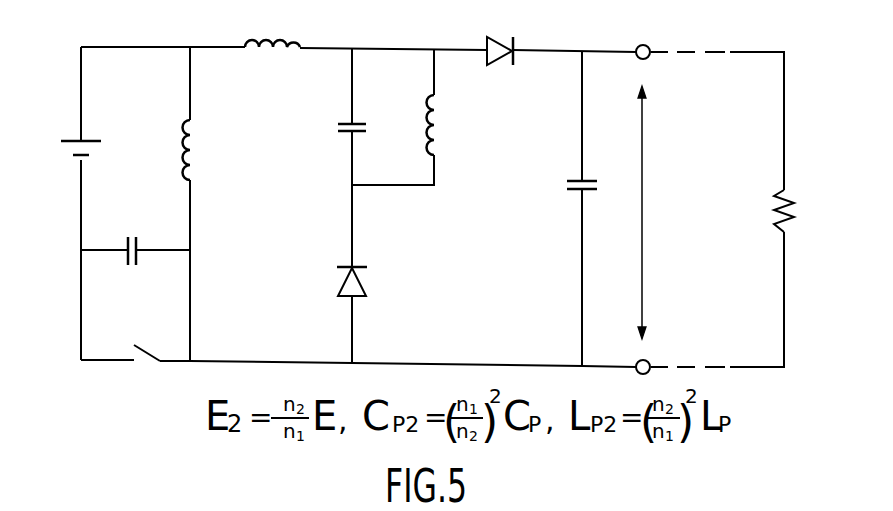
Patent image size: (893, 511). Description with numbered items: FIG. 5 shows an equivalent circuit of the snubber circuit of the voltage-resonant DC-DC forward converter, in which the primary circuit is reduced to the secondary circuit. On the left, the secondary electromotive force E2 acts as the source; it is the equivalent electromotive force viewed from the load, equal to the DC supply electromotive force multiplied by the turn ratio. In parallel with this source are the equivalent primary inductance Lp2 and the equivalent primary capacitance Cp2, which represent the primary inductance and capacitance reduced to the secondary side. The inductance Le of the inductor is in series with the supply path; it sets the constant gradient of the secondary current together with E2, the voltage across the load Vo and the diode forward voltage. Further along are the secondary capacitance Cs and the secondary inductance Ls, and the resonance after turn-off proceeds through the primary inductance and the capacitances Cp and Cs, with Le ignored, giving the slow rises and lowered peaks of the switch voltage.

The secondary electromotive force E2 is at (60, 158).
The equivalent primary inductance Lp2 is at (217, 150).
The equivalent primary capacitance Cp2 is at (135, 235).
The inductance of inductor Le is at (272, 27).
The secondary capacitance Cs is at (366, 132).
The secondary inductance Ls is at (447, 125).
The voltage across load Vo is at (653, 212).